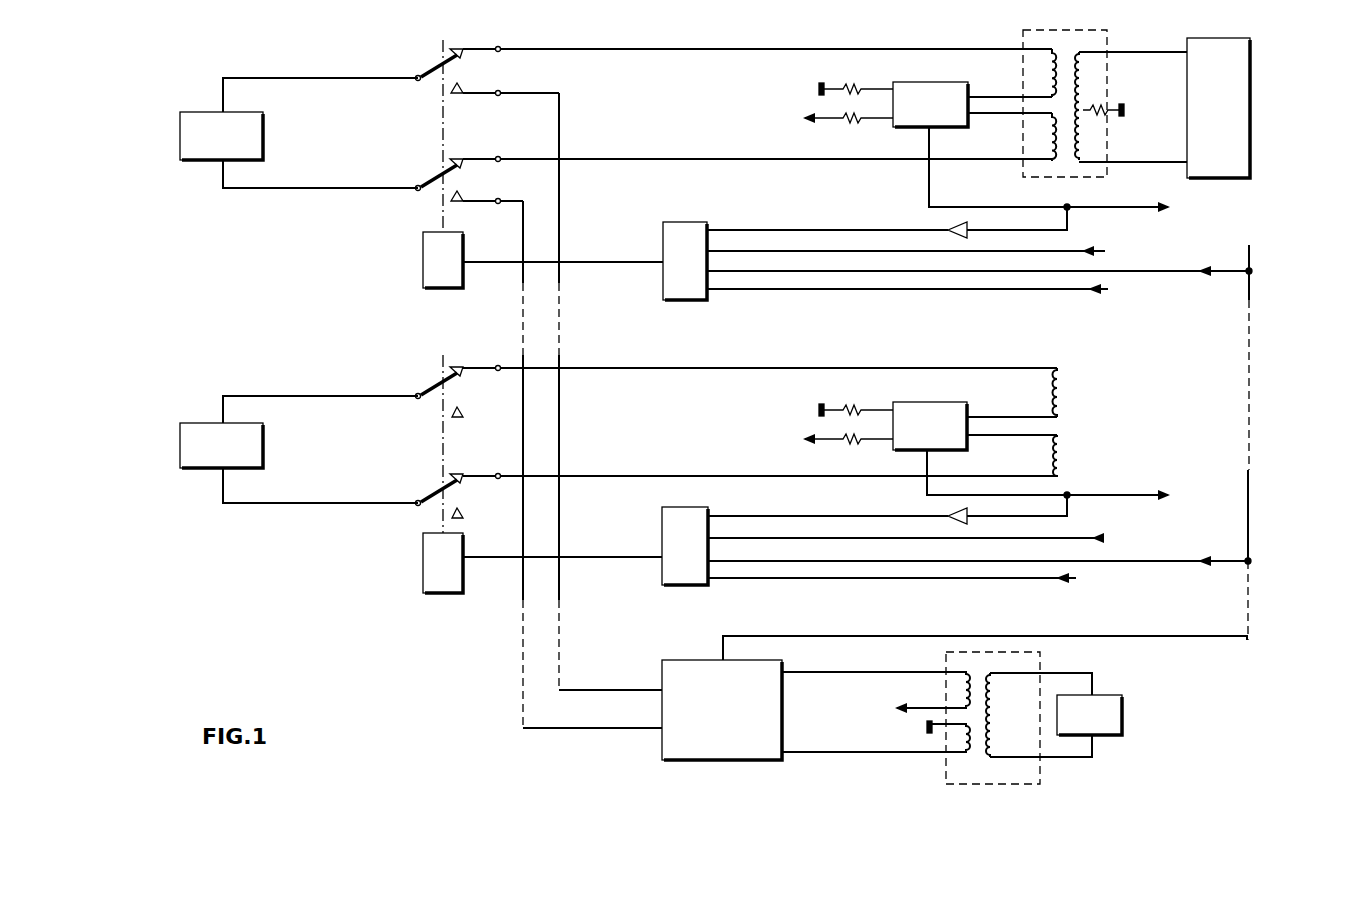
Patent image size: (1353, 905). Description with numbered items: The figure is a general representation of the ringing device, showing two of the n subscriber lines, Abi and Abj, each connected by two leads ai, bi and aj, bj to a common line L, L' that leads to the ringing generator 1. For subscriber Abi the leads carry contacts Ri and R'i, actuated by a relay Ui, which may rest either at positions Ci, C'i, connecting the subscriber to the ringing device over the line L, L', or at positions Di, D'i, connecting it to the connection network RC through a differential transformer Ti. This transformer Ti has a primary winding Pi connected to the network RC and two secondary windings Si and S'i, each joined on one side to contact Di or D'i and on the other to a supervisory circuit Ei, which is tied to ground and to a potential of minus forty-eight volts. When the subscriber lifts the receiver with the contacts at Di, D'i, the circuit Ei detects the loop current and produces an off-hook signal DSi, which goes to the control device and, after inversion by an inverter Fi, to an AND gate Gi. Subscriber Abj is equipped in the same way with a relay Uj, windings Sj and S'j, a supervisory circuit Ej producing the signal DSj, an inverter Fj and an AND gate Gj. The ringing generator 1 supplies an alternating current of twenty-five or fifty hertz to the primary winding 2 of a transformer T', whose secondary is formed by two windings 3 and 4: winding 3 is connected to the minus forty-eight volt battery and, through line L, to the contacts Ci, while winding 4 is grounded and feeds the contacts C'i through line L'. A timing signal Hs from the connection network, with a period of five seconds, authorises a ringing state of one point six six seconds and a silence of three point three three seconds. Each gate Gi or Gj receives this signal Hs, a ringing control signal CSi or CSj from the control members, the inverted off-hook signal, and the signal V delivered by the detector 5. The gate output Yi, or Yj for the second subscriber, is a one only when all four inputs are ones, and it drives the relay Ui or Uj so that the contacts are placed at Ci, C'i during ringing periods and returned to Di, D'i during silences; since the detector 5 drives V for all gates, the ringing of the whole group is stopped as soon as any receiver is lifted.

The ringing generator 1 is at (1122, 720).
The primary winding 2 is at (997, 713).
The secondary winding 3 is at (957, 688).
The secondary winding 4 is at (960, 745).
The detector 5 is at (688, 672).
The transformer T' is at (952, 715).
The common line L is at (599, 391).
The common line L' is at (565, 464).
The subscriber line Abi is at (200, 142).
The subscriber line Abj is at (197, 433).
The lead ai is at (320, 85).
The lead bi is at (345, 183).
The lead aj is at (318, 398).
The lead bj is at (335, 498).
The contact Ri is at (435, 58).
The contact R'i is at (433, 169).
The contact position Di is at (757, 36).
The contact position Ci is at (505, 80).
The contact position D'i is at (757, 146).
The contact position C'i is at (487, 219).
The relay Ui is at (437, 258).
The relay Uj is at (432, 565).
The control signal Yi is at (621, 265).
The control signal Yj is at (625, 562).
The AND gate Gi is at (668, 250).
The AND gate Gj is at (673, 537).
The inverter Fi is at (947, 228).
The inverter Fj is at (947, 513).
The supervisory circuit Ei is at (887, 77).
The supervisory circuit Ej is at (925, 412).
The secondary winding Si is at (1048, 63).
The secondary winding S'i is at (1019, 159).
The secondary winding Sj is at (1062, 392).
The secondary winding S'j is at (1085, 458).
The differential transformer Ti is at (1070, 108).
The primary winding Pi is at (1082, 68).
The connection network RC is at (1283, 185).
The off-hook signal DSi is at (1071, 178).
The off-hook signal DSj is at (1070, 484).
The ringing control signal CSi is at (927, 256).
The ringing control signal CSj is at (923, 543).
The detector signal V is at (979, 442).
The timing signal Hs is at (922, 443).